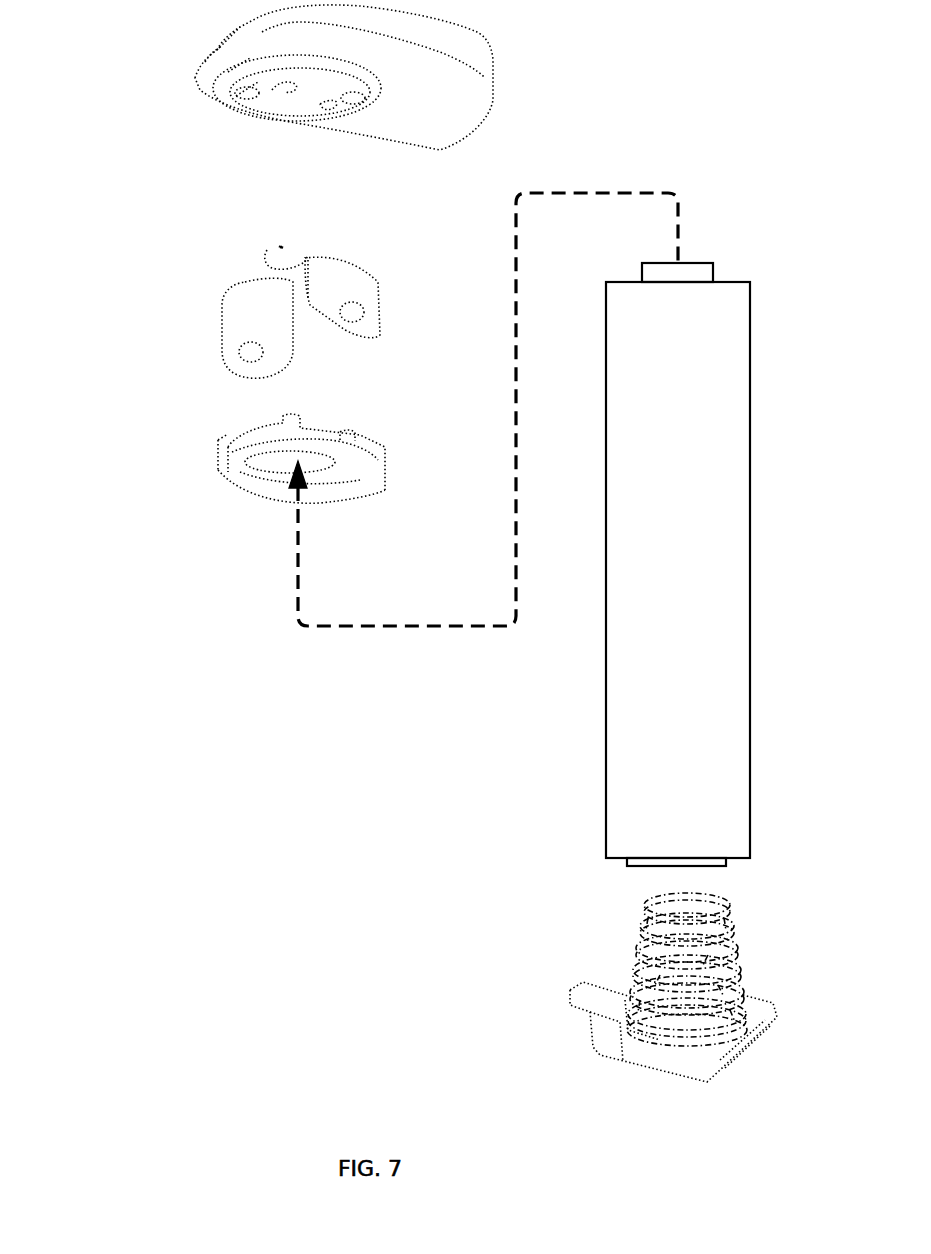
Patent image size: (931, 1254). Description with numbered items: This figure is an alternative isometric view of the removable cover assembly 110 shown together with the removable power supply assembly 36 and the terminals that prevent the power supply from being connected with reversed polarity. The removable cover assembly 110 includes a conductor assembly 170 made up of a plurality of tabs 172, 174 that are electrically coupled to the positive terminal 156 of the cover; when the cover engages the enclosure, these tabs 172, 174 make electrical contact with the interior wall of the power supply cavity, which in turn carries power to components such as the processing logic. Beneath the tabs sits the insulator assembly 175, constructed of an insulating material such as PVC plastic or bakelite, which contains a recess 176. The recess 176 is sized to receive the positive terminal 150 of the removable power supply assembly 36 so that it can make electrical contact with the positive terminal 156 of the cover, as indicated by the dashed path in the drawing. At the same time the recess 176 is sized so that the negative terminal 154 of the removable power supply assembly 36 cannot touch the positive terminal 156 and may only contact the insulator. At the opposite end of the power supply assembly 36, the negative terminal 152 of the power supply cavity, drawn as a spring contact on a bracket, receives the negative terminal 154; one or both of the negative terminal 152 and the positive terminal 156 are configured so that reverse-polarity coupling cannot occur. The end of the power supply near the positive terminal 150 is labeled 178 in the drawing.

The removable cover assembly 110 is at (210, 50).
The conductor assembly 170 is at (180, 272).
The tab 172 is at (237, 317).
The tab 174 is at (362, 280).
The positive terminal 156 is at (293, 282).
The insulator assembly 175 is at (228, 443).
The recess 176 is at (282, 463).
The removable power supply assembly 36 is at (644, 535).
The positive terminal 150 is at (697, 263).
The battery top end 178 is at (625, 282).
The negative terminal 154 is at (627, 865).
The negative terminal 152 is at (630, 960).